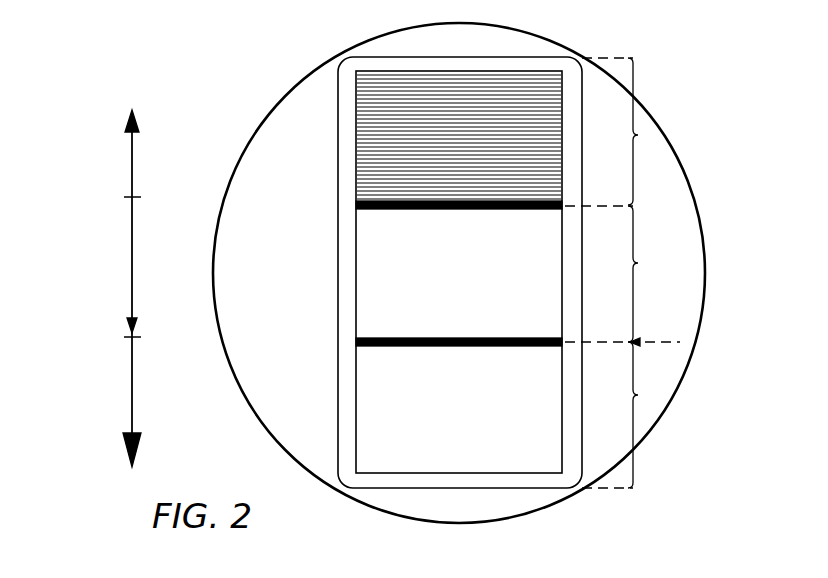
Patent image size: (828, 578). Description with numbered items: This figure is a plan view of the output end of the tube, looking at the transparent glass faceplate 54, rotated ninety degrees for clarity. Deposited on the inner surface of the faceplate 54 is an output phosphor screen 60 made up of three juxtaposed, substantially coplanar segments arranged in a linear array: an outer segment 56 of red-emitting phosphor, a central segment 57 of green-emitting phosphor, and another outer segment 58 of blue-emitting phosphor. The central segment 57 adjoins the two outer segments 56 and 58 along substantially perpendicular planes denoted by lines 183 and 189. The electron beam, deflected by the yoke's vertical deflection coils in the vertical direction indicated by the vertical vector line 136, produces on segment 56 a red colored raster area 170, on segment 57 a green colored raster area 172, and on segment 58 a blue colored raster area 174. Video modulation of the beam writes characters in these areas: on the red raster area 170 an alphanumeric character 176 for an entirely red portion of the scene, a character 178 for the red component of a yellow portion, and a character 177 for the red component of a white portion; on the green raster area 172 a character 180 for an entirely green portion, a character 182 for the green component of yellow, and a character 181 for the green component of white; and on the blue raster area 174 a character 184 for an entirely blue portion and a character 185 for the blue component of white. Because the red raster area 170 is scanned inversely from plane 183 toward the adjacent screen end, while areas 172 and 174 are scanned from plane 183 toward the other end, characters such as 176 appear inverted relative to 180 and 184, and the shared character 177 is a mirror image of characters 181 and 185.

The faceplate 54 is at (245, 172).
The outer segment 56 is at (638, 135).
The central segment 57 is at (638, 263).
The outer segment 58 is at (638, 395).
The output phosphor screen 60 is at (418, 493).
The vertical vector line 136 is at (130, 272).
The red colored raster area 170 is at (350, 131).
The green colored raster area 172 is at (350, 268).
The blue colored raster area 174 is at (350, 386).
The alphanumeric character 176 is at (375, 176).
The alphanumeric character 177 is at (548, 183).
The alphanumeric character 178 is at (396, 100).
The character 180 is at (362, 243).
The character 181 is at (547, 230).
The character 182 is at (362, 316).
The plane 183 is at (650, 207).
The character 184 is at (365, 422).
The character 185 is at (547, 367).
The plane 189 is at (650, 341).